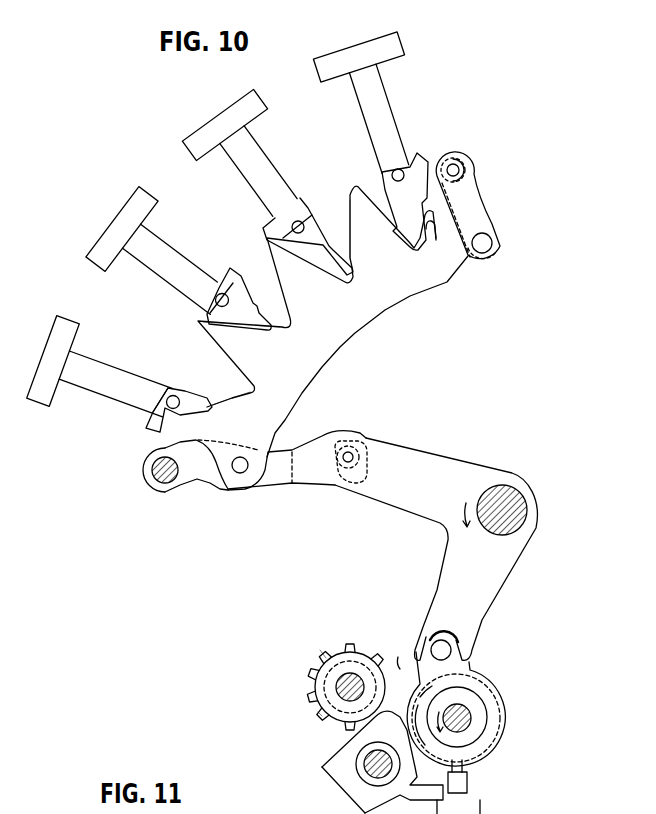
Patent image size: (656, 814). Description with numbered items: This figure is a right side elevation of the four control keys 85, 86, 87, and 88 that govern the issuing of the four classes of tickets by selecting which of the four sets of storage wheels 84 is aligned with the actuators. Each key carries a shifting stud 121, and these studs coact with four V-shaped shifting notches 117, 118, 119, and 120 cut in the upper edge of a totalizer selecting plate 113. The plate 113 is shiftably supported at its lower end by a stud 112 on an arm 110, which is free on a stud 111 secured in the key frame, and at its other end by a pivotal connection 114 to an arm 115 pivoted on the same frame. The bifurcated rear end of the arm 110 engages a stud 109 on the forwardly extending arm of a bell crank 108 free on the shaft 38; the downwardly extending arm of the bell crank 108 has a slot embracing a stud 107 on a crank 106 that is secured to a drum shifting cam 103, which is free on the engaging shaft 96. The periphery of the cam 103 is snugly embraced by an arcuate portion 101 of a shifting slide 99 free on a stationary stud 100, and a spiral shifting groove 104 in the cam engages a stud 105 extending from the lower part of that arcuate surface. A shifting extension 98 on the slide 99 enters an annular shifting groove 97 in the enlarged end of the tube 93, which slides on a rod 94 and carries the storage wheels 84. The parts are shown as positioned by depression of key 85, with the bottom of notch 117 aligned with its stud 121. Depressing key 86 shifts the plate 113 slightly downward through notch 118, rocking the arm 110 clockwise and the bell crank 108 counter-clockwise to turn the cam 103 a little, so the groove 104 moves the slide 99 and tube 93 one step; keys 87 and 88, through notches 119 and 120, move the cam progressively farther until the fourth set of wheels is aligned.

The shaft 38 is at (522, 505).
The storage wheels 84 is at (323, 652).
The control key 85 is at (343, 57).
The control key 86 is at (212, 125).
The control key 87 is at (115, 230).
The control key 88 is at (55, 355).
The tube 93 is at (354, 650).
The rod 94 is at (340, 684).
The engaging shaft 96 is at (472, 718).
The annular shifting groove 97 is at (316, 713).
The shifting extension 98 is at (399, 665).
The shifting slide 99 is at (325, 767).
The stationary stud 100 is at (373, 760).
The arcuate portion 101 is at (458, 807).
The drum shifting cam 103 is at (500, 723).
The spiral shifting groove 104 is at (500, 740).
The stud 105 is at (482, 772).
The crank 106 is at (478, 688).
The stud 107 is at (452, 654).
The bell crank 108 is at (493, 587).
The stud 109 is at (363, 443).
The arm 110 is at (282, 478).
The stud 111 is at (167, 483).
The stud 112 is at (238, 472).
The totalizer selecting plate 113 is at (342, 326).
The pivot 114 is at (492, 240).
The arm 115 is at (472, 188).
The shifting notch 117 is at (436, 234).
The shifting notch 118 is at (325, 262).
The shifting notch 119 is at (250, 320).
The shifting notch 120 is at (212, 402).
The shifting stud 121 is at (399, 168).